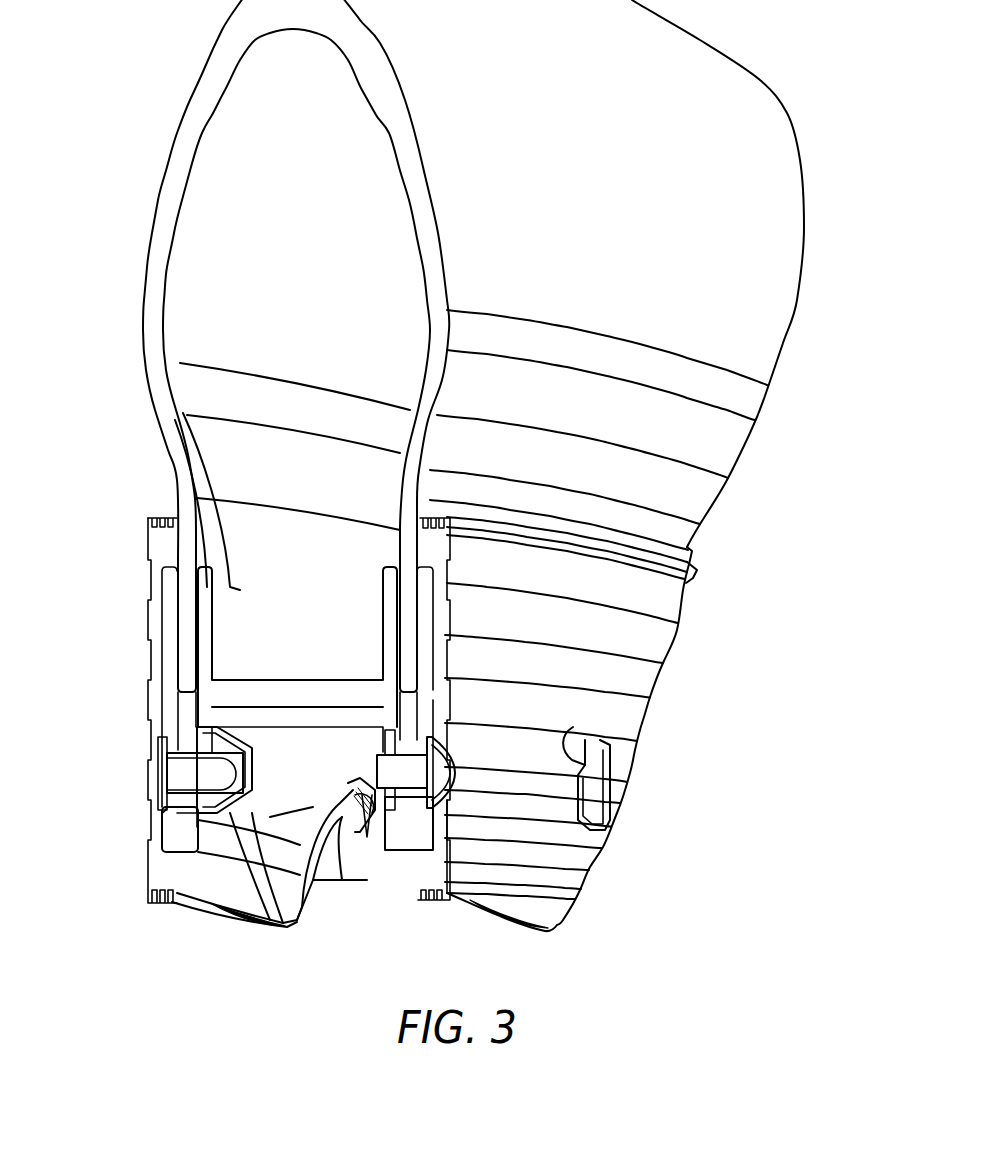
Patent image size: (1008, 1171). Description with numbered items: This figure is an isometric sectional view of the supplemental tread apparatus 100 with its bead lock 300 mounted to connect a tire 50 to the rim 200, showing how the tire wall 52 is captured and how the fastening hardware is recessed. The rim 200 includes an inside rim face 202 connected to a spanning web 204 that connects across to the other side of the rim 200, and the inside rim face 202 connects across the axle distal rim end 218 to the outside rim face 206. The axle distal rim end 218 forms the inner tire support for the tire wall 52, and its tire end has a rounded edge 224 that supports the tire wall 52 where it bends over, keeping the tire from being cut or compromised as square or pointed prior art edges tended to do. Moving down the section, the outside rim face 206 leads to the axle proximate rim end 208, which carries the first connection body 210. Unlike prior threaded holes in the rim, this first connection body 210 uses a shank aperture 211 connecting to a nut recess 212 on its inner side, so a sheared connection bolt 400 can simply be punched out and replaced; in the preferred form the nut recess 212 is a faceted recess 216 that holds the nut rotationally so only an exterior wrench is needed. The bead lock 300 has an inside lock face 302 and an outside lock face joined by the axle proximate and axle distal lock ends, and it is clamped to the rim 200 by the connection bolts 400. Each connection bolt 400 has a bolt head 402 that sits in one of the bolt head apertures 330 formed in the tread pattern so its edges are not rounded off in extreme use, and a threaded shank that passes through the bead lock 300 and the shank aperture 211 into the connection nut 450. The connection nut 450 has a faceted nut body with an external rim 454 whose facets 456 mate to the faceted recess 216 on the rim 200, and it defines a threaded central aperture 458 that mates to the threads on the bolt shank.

The tire 50 is at (810, 193).
The tire wall 52 is at (745, 330).
The supplemental tread apparatus 100 is at (703, 557).
The rim 200 is at (230, 587).
The inside rim face 202 is at (210, 588).
The spanning web 204 is at (247, 673).
The outside rim face 206 is at (195, 605).
The axle proximate rim end 208 is at (193, 845).
The first connection body 210 is at (187, 730).
The shank aperture 211 is at (180, 815).
The nut recess 212 is at (243, 900).
The faceted recess 216 is at (342, 882).
The axle distal rim end 218 is at (197, 560).
The rounded edge 224 is at (177, 517).
The bead lock 300 is at (440, 563).
The inside lock face 302 is at (445, 627).
The bolt head apertures 330 is at (480, 757).
The connection bolt 400 is at (598, 803).
The bolt head 402 is at (450, 800).
The connection nut 450 is at (393, 813).
The external rim 454 is at (367, 837).
The facets 456 is at (200, 742).
The central aperture 458 is at (355, 795).